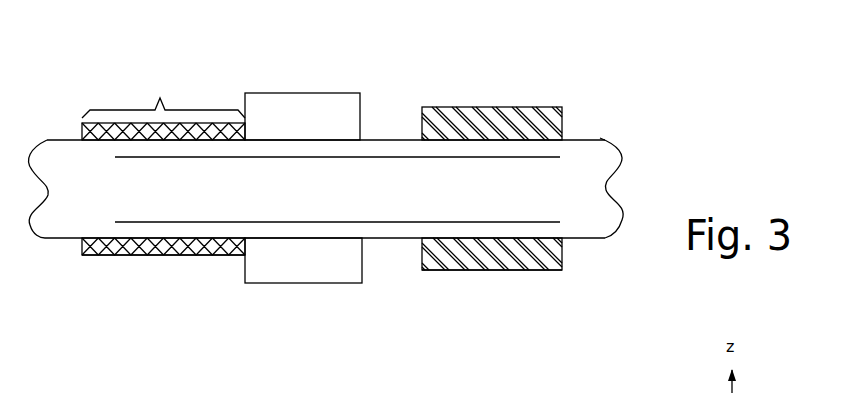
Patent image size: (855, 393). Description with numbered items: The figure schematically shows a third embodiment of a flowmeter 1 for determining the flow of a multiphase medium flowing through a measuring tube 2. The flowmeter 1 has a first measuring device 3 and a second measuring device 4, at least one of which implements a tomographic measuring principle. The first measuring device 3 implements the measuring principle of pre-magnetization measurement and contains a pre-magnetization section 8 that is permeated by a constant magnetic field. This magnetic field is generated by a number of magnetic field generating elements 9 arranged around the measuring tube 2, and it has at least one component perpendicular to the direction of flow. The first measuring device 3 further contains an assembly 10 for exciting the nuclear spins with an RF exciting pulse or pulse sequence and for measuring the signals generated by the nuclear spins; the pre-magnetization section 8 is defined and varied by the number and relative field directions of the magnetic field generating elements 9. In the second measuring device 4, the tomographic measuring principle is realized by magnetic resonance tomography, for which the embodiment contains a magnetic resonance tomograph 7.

The flowmeter 1 is at (603, 98).
The measuring tube 2 is at (390, 173).
The first measuring device 3 is at (188, 280).
The second measuring device 4 is at (513, 285).
The magnetic resonance tomograph 7 is at (500, 115).
The pre-magnetization section 8 is at (163, 95).
The magnetic field generating elements 9 is at (93, 256).
The assembly for exciting nuclear spins and measuring signals 10 is at (310, 265).